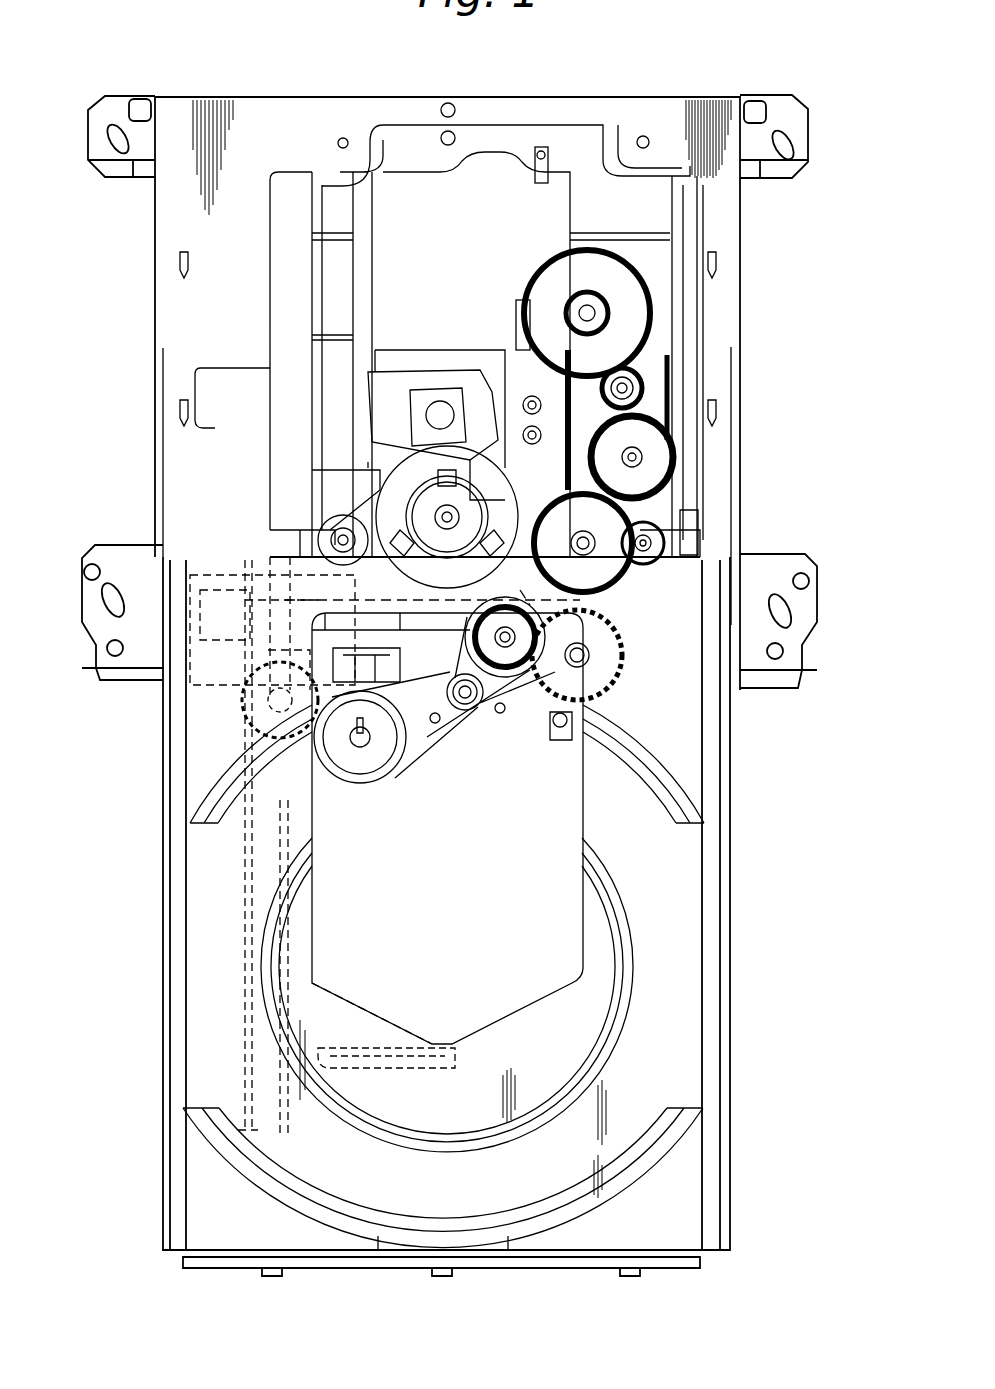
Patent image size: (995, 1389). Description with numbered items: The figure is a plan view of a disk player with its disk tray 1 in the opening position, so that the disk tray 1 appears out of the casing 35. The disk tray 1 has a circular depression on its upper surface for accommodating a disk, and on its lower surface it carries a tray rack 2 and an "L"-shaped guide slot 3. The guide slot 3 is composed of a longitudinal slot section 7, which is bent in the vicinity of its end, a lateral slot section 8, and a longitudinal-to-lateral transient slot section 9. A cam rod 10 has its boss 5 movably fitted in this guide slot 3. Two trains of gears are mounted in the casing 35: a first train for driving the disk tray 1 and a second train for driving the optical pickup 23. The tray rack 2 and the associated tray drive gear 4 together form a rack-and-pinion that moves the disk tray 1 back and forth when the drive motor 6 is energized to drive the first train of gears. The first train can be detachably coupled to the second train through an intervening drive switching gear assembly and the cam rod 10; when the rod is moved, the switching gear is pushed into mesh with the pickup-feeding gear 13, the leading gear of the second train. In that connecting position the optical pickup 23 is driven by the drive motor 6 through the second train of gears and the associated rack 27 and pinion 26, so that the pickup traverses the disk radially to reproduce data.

The disk tray 1 is at (160, 1158).
The tray rack 2 is at (245, 1080).
The "L"-shaped guide slot 3 is at (312, 1000).
The tray drive gear 4 is at (240, 706).
The boss 5 is at (250, 612).
The drive motor 6 is at (500, 735).
The longitudinal slot section 7 is at (318, 800).
The lateral slot section 8 is at (440, 1060).
The longitudinal-to-lateral transient slot section 9 is at (300, 1072).
The cam rod 10 is at (343, 613).
The pickup-feeding gear 13 is at (628, 535).
The optical pickup 23 is at (405, 375).
The pinion 26 is at (600, 322).
The rack 27 is at (518, 345).
The casing 35 is at (734, 183).